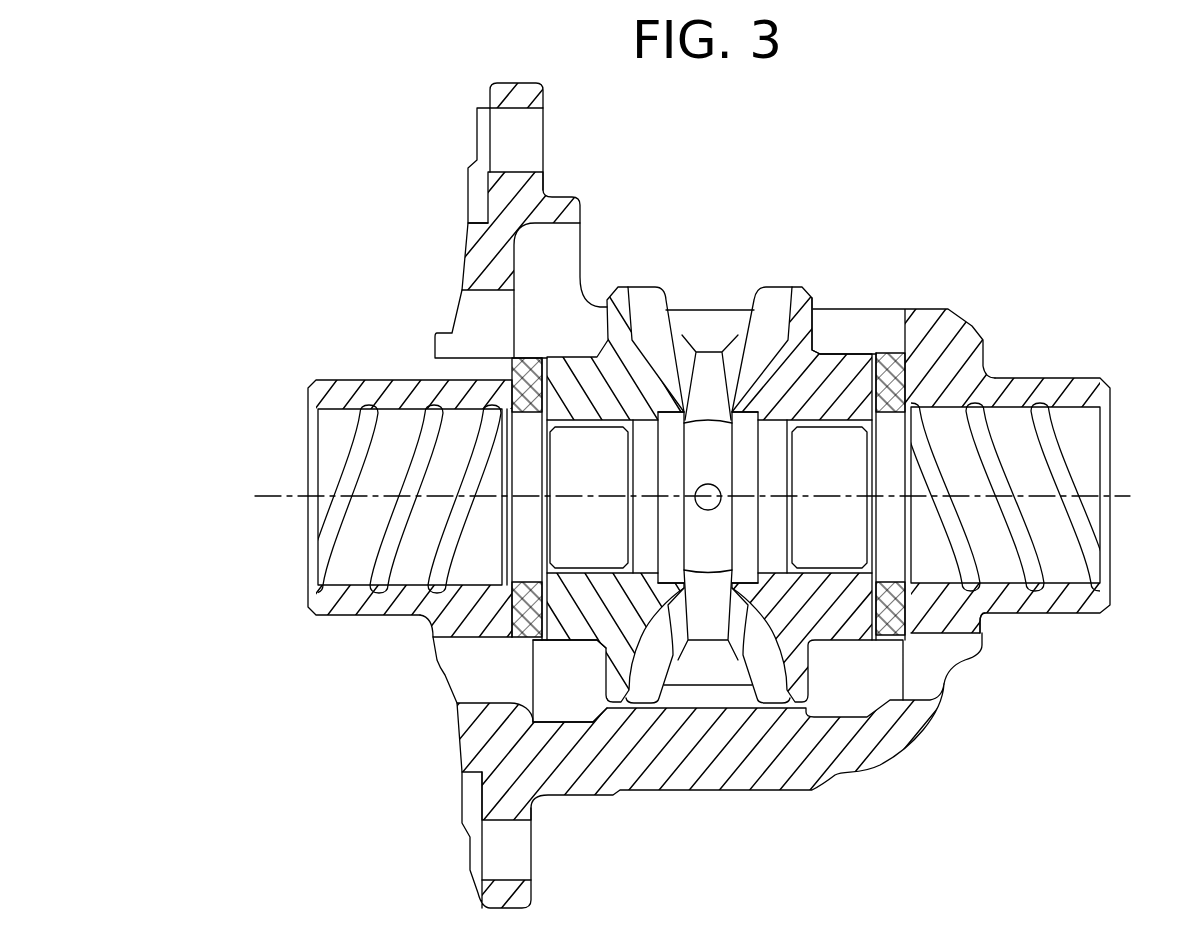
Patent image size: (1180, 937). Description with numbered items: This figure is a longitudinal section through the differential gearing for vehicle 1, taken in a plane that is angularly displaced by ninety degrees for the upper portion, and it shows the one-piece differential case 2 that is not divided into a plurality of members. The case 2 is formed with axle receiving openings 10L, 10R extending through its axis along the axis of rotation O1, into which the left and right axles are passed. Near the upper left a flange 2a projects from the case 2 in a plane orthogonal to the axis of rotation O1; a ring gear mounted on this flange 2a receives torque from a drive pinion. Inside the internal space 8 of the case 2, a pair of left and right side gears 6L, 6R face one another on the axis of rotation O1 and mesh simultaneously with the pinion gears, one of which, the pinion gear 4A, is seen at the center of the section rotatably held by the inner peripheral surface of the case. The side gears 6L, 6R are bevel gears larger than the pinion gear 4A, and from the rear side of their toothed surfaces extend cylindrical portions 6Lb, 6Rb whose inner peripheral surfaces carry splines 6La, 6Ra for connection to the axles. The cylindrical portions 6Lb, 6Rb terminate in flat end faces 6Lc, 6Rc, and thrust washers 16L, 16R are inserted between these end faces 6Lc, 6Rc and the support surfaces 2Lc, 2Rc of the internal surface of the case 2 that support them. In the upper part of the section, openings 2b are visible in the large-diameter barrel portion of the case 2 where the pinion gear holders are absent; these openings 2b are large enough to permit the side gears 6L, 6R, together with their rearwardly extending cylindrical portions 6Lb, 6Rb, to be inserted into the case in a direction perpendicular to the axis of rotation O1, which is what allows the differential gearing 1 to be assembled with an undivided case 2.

The differential gearing for vehicle 1 is at (1017, 152).
The differential case 2 is at (568, 178).
The flange 2a is at (487, 188).
The openings 2b is at (851, 325).
The support surface 2Lc is at (553, 412).
The support surface 2Rc is at (843, 418).
The pinion gear 4A is at (706, 452).
The left side gear 6L is at (553, 645).
The splines 6La is at (550, 566).
The cylindrical portion 6Lb is at (540, 642).
The end face 6Lc is at (433, 615).
The right side gear 6R is at (862, 648).
The splines 6Ra is at (807, 567).
The cylindrical portion 6Rb is at (850, 627).
The end face 6Rc is at (985, 613).
The internal space 8 is at (580, 690).
The axle receiving opening 10L is at (353, 557).
The axle receiving opening 10R is at (1100, 553).
The thrust washer 16L is at (520, 387).
The thrust washer 16R is at (902, 388).
The axis of rotation O1 is at (1023, 493).